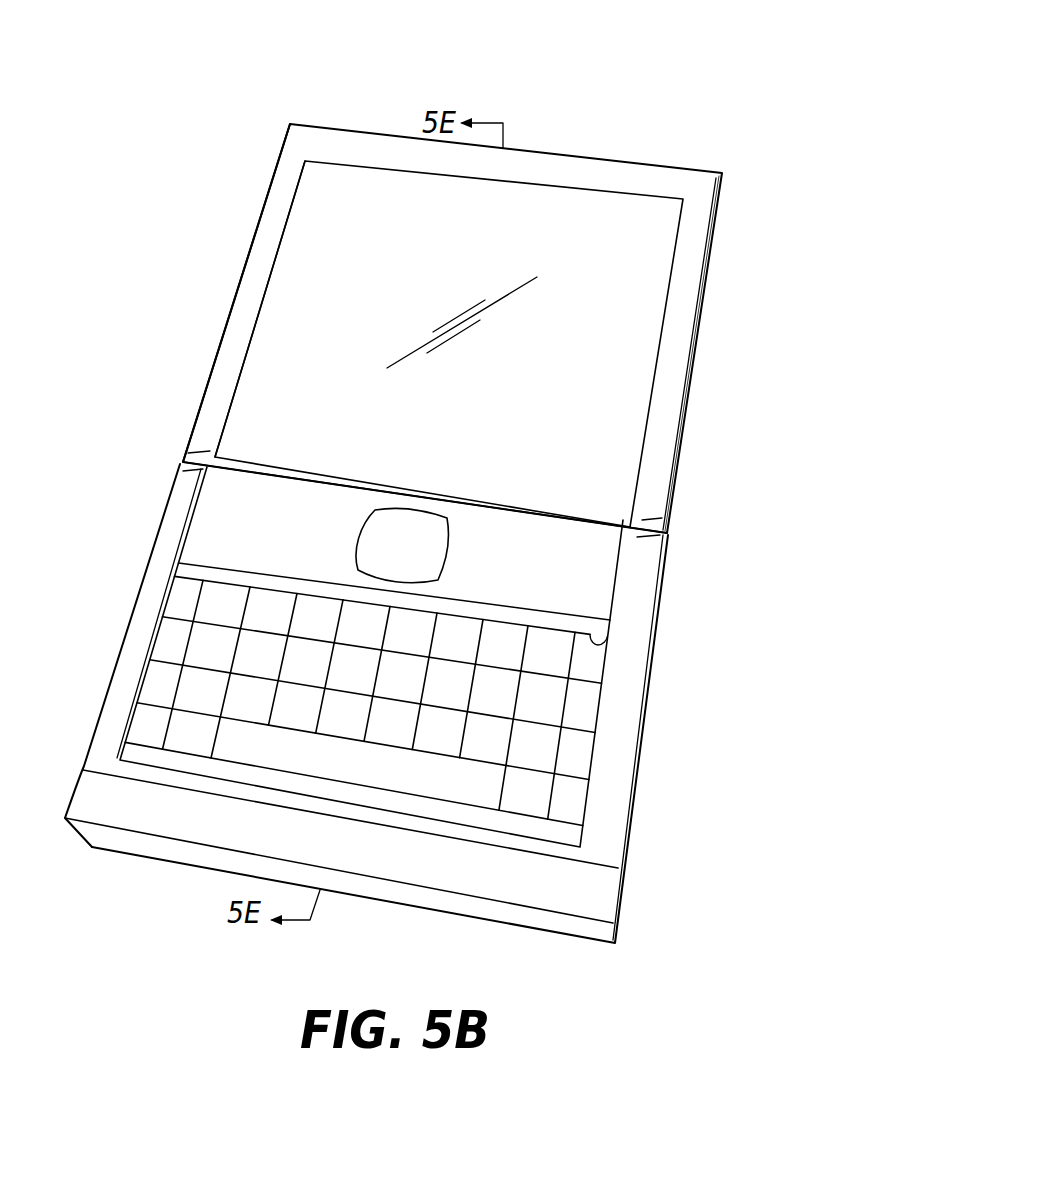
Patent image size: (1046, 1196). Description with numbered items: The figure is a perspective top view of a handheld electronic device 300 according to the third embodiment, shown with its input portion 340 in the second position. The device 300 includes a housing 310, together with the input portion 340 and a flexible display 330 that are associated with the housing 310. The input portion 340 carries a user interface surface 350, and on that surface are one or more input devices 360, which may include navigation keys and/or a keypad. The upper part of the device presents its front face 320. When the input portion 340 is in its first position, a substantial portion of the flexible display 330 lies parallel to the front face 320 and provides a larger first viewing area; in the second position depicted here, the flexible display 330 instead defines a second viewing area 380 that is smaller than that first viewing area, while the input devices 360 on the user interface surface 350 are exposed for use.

The handheld electronic device 300 is at (730, 95).
The housing 310 is at (692, 417).
The front face 320 is at (567, 184).
The flexible display 330 is at (247, 340).
The input portion 340 is at (650, 707).
The user interface surface 350 is at (598, 645).
The input devices 360 is at (567, 802).
The second viewing area 380 is at (473, 424).